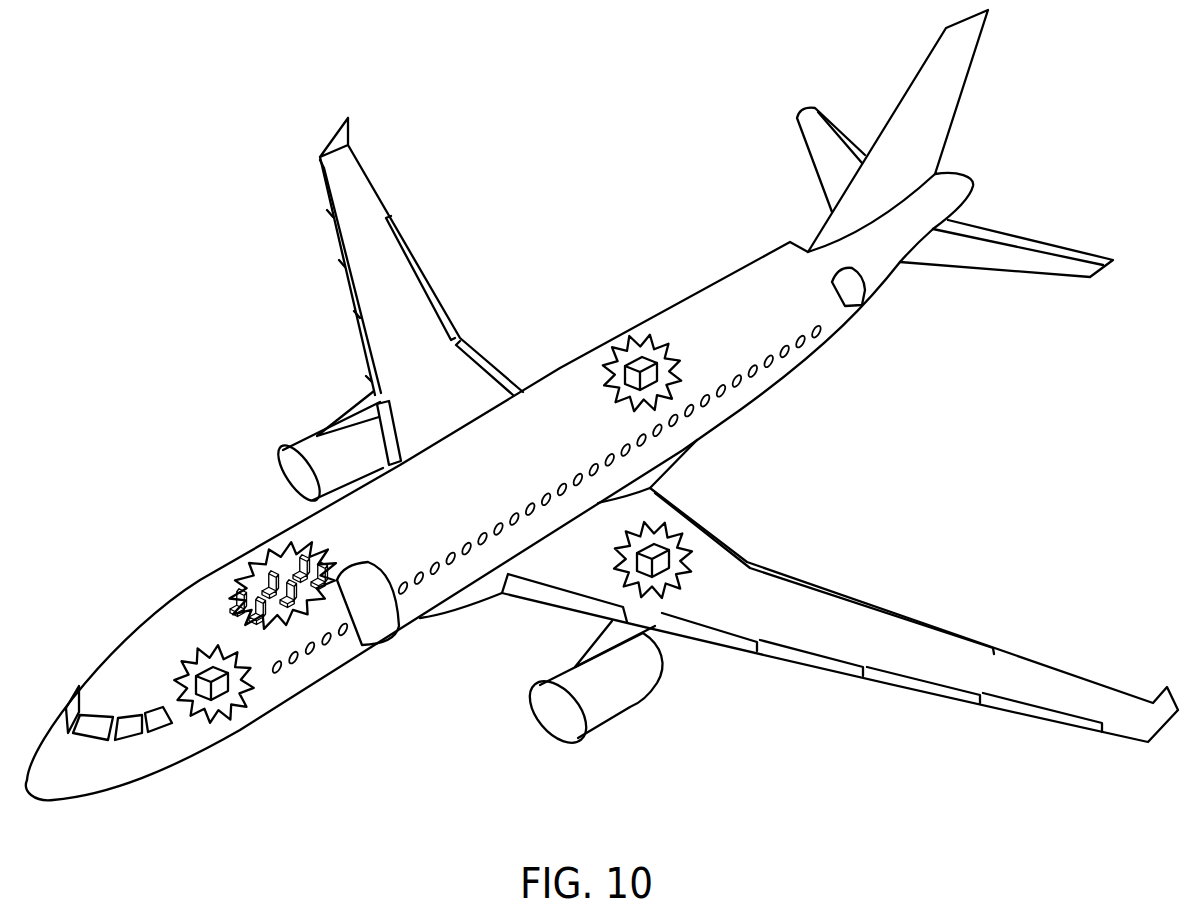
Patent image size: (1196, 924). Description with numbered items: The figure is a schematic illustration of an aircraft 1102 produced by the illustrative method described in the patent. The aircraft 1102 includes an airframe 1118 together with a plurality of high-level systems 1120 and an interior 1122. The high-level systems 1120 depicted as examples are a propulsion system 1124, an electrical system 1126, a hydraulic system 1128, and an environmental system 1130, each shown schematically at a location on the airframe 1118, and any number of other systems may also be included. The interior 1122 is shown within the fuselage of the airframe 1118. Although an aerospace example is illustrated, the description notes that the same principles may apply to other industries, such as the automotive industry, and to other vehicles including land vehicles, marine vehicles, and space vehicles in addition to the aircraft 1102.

The aircraft 1102 is at (147, 359).
The airframe 1118 is at (272, 536).
The high-level systems 1120 is at (915, 510).
The interior 1122 is at (233, 600).
The propulsion system 1124 is at (302, 436).
The electrical system 1126 is at (210, 673).
The hydraulic system 1128 is at (663, 566).
The environmental system 1130 is at (636, 363).